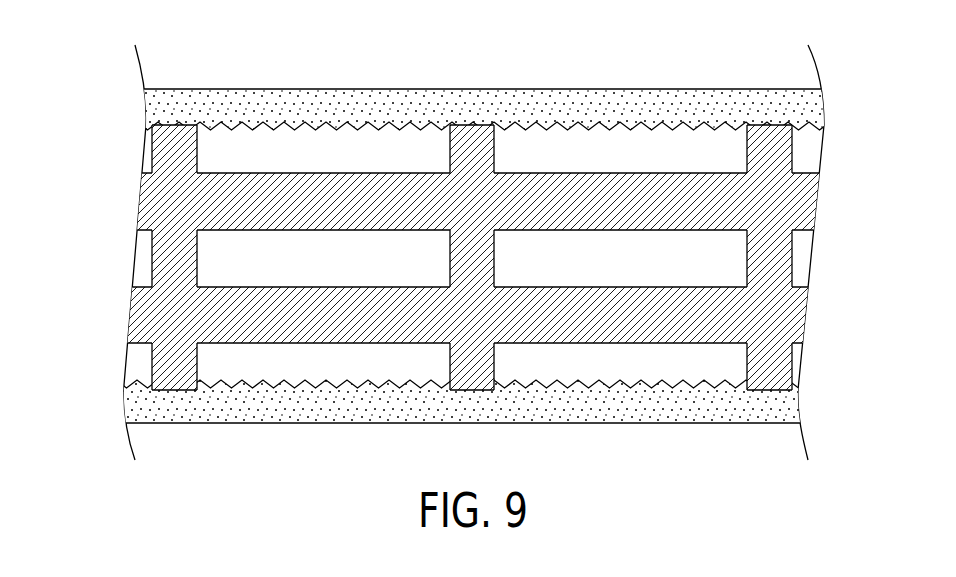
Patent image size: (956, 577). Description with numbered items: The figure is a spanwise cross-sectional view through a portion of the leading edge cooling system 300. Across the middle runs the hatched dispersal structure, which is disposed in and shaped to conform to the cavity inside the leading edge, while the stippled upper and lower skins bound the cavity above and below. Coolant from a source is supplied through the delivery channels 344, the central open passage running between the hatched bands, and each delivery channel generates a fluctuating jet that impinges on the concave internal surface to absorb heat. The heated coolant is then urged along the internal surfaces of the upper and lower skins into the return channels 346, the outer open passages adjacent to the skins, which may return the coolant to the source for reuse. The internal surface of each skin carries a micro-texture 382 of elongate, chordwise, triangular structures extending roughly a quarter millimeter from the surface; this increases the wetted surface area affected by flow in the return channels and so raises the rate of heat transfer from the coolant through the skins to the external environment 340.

The cooling system 300 is at (105, 78).
The external environment 340 is at (727, 40).
The delivery channels 344 is at (340, 271).
The return channels 346 is at (340, 166).
The micro-texture 382 is at (563, 127).